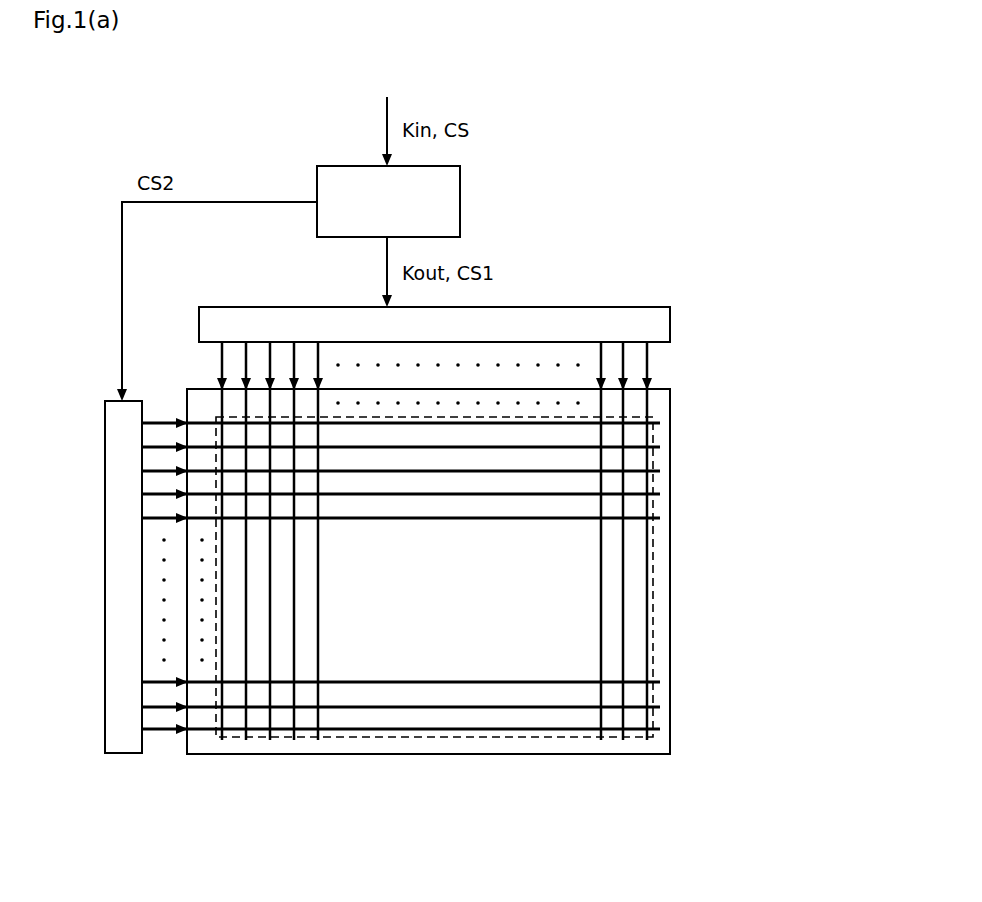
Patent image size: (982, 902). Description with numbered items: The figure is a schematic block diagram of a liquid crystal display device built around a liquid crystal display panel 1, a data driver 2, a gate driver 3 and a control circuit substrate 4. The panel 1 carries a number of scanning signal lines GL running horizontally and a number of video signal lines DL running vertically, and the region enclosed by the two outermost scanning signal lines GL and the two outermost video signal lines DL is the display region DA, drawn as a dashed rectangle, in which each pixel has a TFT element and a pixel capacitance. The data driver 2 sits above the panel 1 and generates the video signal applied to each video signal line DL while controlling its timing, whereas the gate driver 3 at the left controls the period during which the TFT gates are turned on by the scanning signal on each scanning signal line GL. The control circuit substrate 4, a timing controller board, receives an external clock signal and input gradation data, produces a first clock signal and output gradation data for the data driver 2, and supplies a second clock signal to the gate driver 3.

The liquid crystal display panel 1 is at (618, 756).
The data driver 2 is at (620, 307).
The gate driver 3 is at (122, 753).
The control circuit substrate 4 is at (341, 166).
The display region DA is at (360, 740).
The video signal lines DL is at (322, 600).
The scanning signal lines GL is at (430, 522).